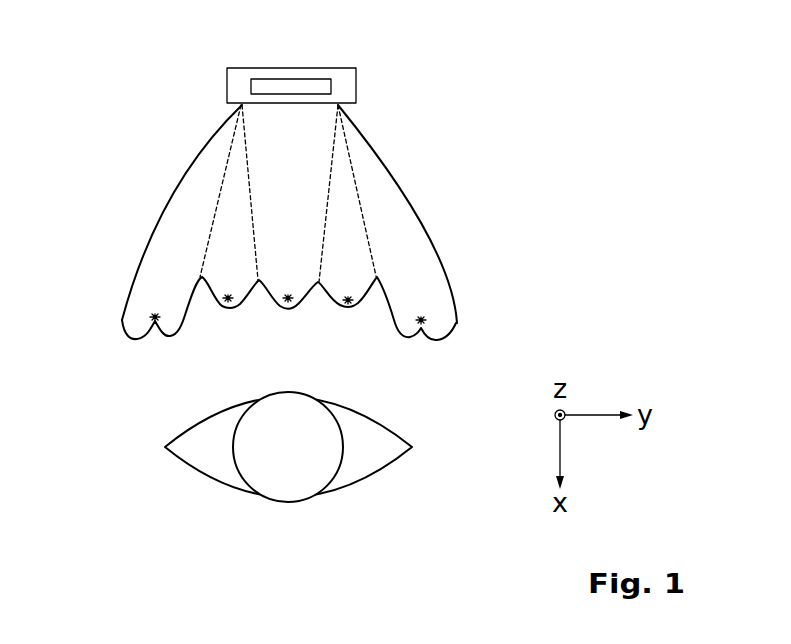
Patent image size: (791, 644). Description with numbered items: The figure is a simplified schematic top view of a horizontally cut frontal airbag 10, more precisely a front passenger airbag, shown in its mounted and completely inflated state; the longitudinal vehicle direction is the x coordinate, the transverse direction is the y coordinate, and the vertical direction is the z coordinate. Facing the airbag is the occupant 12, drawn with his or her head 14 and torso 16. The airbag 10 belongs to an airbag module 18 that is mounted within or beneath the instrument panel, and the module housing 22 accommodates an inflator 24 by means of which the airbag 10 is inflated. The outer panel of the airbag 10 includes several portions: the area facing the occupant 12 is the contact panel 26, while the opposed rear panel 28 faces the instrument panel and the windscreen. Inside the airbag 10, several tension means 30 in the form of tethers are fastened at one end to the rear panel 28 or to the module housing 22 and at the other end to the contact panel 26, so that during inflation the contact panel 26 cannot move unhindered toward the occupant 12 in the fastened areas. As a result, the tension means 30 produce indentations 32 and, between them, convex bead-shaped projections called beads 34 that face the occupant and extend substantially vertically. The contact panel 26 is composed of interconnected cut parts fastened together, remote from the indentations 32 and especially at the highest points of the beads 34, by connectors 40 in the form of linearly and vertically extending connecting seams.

The frontal airbag 10 is at (286, 270).
The occupant 12 is at (298, 480).
The head 14 is at (285, 487).
The torso 16 is at (195, 458).
The airbag module 18 is at (301, 52).
The module housing 22 is at (227, 89).
The inflator 24 is at (287, 79).
The contact panel 26 is at (286, 335).
The rear panel 28 is at (212, 138).
The tension means 30 is at (250, 180).
The indentations 32 is at (317, 282).
The beads 34 is at (122, 320).
The connectors 40 is at (153, 316).